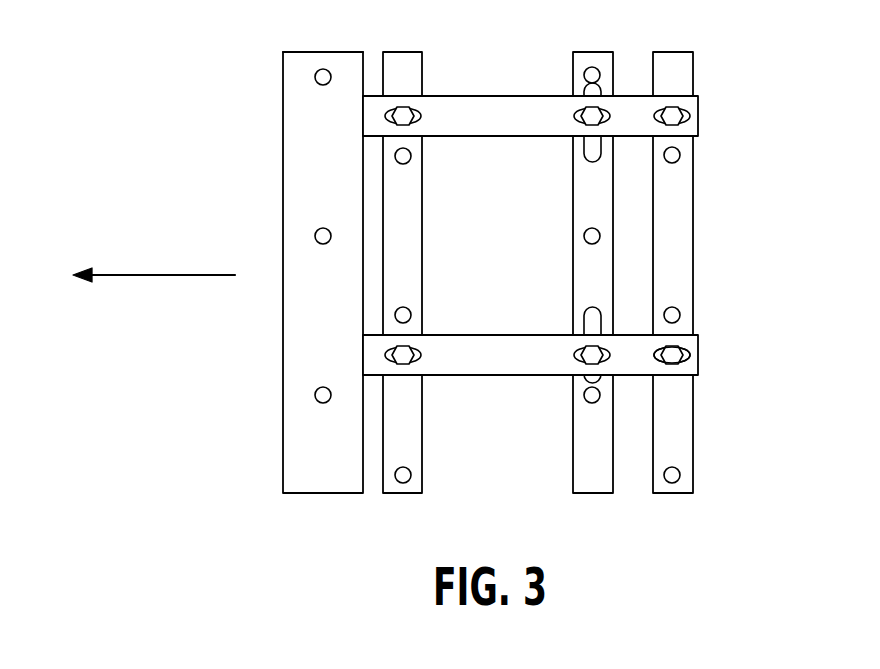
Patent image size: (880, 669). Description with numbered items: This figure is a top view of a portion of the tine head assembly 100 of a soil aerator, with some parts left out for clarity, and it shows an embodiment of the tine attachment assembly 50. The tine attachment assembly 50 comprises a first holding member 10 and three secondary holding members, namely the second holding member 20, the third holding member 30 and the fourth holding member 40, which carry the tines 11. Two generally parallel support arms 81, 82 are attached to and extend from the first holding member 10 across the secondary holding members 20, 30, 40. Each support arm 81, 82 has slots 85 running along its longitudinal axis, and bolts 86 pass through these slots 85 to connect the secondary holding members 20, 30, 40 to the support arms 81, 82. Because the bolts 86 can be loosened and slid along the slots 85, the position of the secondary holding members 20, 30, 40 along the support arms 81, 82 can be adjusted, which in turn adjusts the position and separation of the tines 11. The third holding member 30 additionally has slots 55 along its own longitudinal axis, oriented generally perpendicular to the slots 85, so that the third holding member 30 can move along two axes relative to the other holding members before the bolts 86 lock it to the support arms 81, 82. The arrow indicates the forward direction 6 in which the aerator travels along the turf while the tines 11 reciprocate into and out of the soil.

The tine head assembly 100 is at (176, 34).
The tine attachment assembly 50 is at (308, 44).
The forward direction 6 is at (173, 275).
The first holding member 10 is at (322, 487).
The second holding member 20 is at (410, 487).
The third holding member 30 is at (662, 299).
The fourth holding member 40 is at (700, 299).
The tine 11 is at (677, 161).
The slot 55 is at (595, 318).
The support arm 81 is at (557, 377).
The support arm 82 is at (495, 105).
The slot 85 is at (687, 362).
The bolt 86 is at (675, 350).